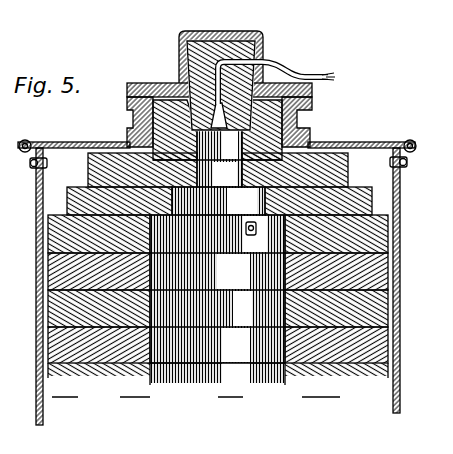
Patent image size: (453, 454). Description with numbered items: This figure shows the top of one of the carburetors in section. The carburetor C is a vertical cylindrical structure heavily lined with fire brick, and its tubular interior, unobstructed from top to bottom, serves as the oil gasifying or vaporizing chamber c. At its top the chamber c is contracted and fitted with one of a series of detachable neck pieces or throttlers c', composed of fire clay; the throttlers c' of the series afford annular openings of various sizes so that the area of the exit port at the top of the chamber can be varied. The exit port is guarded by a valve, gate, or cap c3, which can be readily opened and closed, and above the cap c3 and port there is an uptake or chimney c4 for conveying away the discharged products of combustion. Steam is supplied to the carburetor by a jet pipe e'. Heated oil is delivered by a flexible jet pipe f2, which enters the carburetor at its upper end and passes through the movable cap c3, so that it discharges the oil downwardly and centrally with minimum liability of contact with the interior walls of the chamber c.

The valve, gate, or cap c3 is at (221, 71).
The jet pipe f2 is at (181, 77).
The carburetor C is at (217, 272).
The detachable neck piece or throttler c' is at (217, 130).
The uptake or chimney c4 is at (217, 158).
The jet pipe e' is at (241, 252).
The oil gasifying or vaporizing chamber c is at (217, 286).